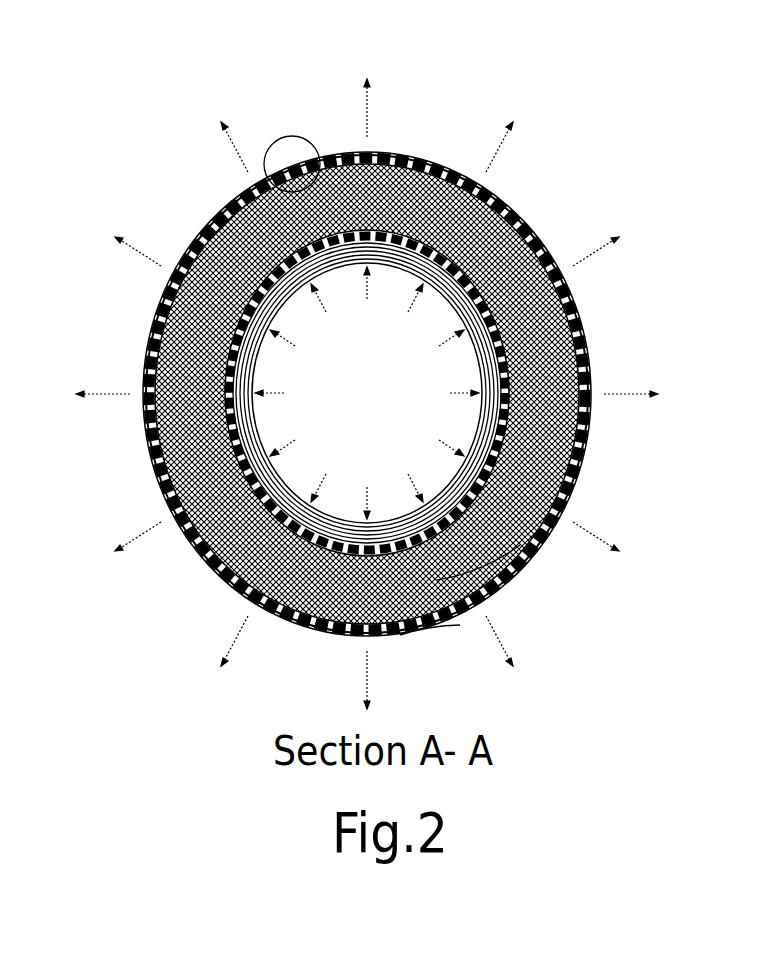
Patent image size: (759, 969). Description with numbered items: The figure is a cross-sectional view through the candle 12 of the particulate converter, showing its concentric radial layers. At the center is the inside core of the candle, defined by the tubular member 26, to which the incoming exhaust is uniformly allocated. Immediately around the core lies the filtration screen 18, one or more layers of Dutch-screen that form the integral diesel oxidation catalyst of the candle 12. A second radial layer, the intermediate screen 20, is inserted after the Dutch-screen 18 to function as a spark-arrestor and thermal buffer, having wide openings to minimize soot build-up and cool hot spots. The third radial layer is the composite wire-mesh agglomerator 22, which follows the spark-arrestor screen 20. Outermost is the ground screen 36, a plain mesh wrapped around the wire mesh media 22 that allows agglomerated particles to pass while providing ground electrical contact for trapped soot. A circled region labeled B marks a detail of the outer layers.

The candle 12 is at (542, 155).
The filtration screen 18 is at (527, 335).
The intermediate screen 20 is at (525, 462).
The wire-mesh agglomerator 22 is at (520, 545).
The tubular member 26 is at (452, 617).
The ground screen 36 is at (590, 362).
The detail B is at (291, 147).